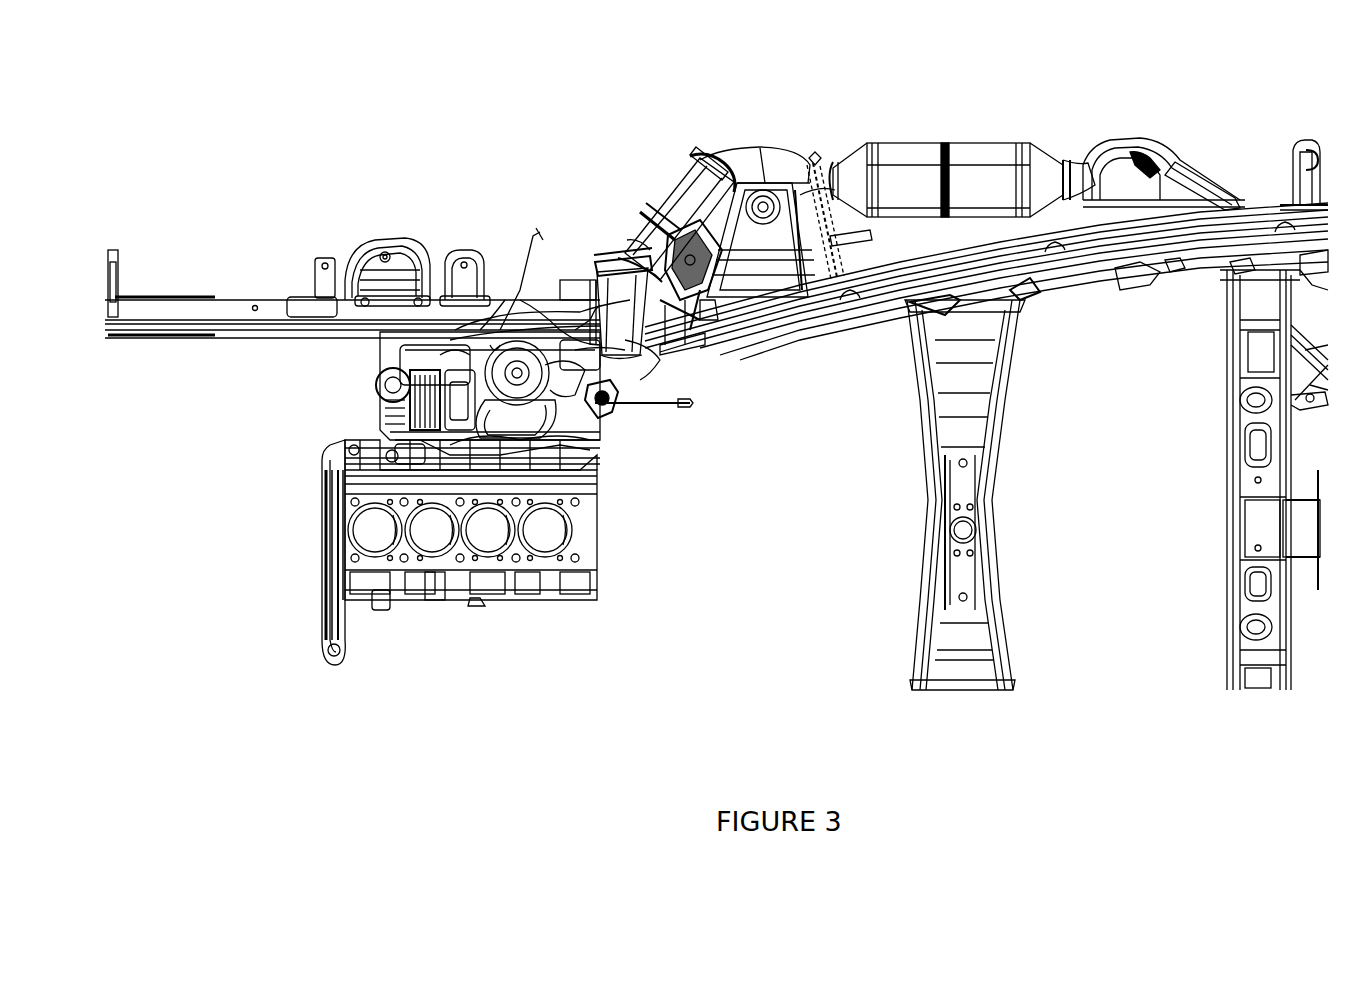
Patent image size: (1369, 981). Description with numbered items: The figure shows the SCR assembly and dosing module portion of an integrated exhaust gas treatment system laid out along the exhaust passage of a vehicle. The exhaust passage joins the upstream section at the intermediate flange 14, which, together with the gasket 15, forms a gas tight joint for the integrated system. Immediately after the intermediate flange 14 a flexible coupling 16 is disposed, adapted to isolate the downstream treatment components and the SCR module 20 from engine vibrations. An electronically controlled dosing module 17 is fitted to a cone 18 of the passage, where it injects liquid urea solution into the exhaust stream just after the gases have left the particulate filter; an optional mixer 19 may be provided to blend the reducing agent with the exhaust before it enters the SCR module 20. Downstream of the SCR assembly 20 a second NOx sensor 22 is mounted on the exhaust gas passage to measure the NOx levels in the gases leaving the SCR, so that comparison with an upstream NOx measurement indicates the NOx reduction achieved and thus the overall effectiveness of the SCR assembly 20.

The intermediate flange 14 is at (385, 257).
The gasket 15 is at (606, 382).
The flexible coupling 16 is at (620, 290).
The electronically controlled dosing module 17 is at (705, 222).
The cone 18 is at (722, 250).
The mixer 19 is at (706, 167).
The SCR module 20 is at (903, 142).
The second NOx sensor 22 is at (1141, 138).